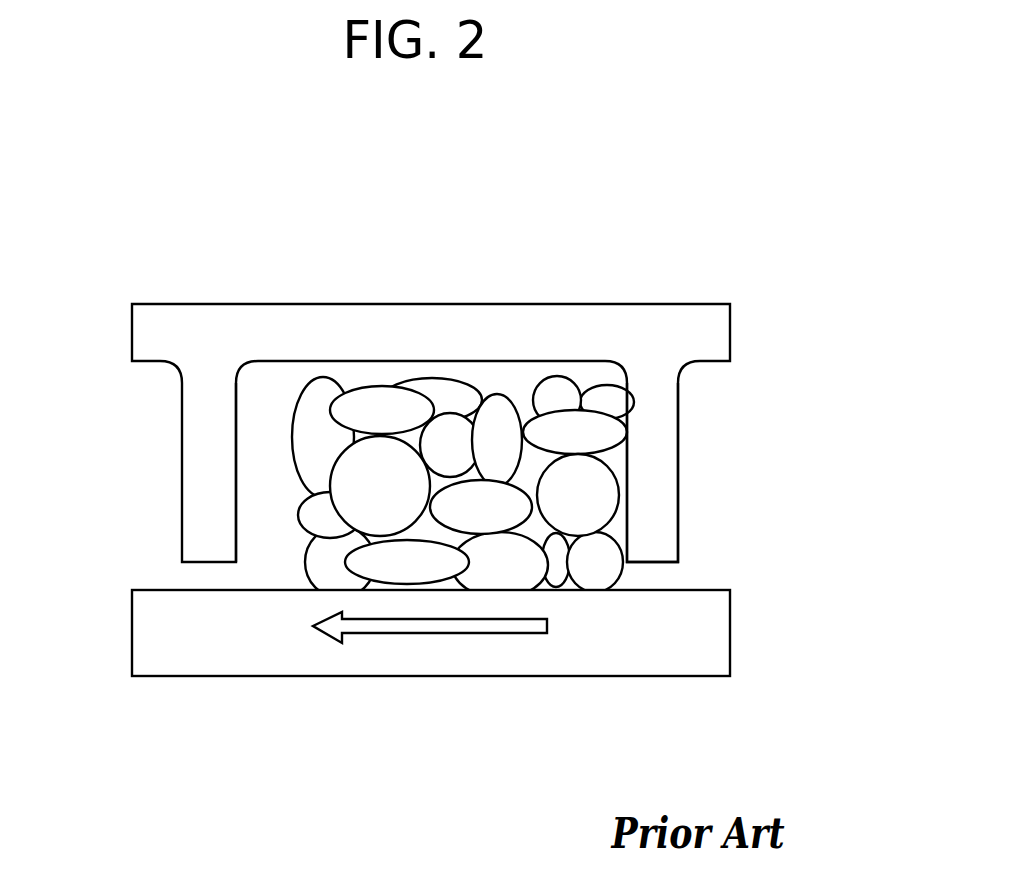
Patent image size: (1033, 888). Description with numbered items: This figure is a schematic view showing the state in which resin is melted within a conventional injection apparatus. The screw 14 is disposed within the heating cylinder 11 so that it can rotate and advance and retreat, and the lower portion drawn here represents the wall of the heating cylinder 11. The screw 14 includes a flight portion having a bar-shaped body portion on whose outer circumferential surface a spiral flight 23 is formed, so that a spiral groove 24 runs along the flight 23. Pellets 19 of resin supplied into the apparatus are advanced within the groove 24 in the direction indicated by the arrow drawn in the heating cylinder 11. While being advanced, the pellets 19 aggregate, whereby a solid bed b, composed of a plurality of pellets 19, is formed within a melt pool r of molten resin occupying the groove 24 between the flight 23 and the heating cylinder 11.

The screw 14 is at (457, 484).
The pellets 19 is at (370, 398).
The solid bed b is at (463, 415).
The spiral groove 24 is at (268, 378).
The flight 23 is at (658, 462).
The heating cylinder 11 is at (687, 620).
The melt pool r is at (277, 540).